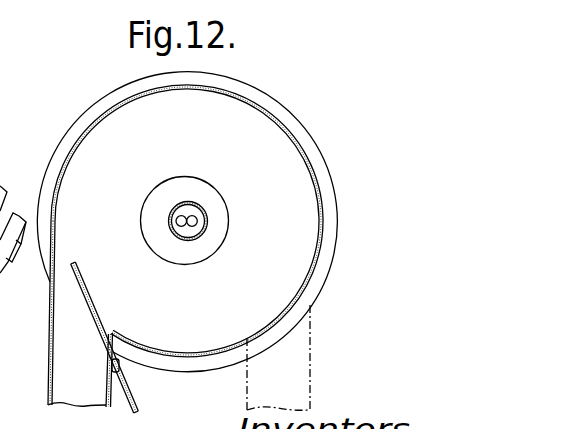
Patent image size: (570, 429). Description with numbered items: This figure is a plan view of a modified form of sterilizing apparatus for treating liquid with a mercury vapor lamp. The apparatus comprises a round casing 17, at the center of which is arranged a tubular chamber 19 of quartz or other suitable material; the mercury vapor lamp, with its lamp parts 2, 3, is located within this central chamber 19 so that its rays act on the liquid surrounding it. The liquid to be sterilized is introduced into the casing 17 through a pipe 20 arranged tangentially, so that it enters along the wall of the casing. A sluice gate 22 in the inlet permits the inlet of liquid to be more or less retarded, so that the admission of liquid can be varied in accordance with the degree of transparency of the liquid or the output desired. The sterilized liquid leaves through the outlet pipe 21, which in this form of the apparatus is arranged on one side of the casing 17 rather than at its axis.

The lamp envelop 2 is at (172, 229).
The lamp electrode 3 is at (207, 220).
The casing 17 is at (71, 154).
The tubular chamber 19 is at (174, 207).
The pipe 20 is at (62, 346).
The outlet pipe 21 is at (258, 388).
The sluice gate 22 is at (140, 384).